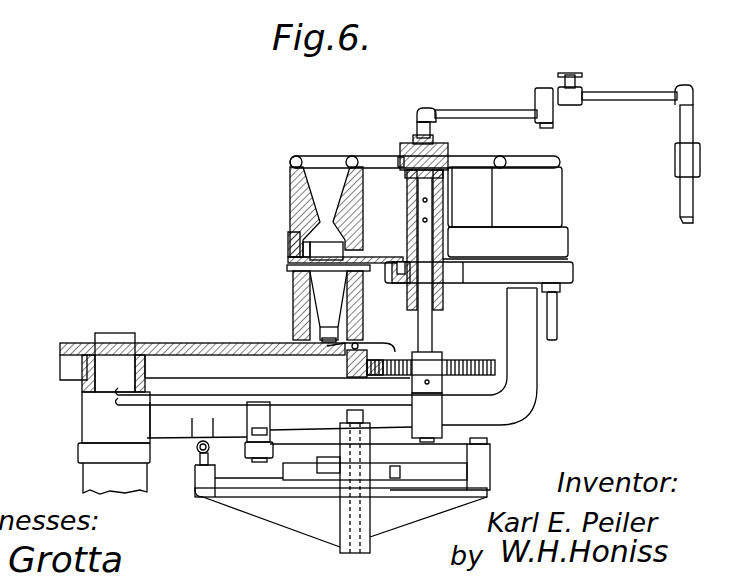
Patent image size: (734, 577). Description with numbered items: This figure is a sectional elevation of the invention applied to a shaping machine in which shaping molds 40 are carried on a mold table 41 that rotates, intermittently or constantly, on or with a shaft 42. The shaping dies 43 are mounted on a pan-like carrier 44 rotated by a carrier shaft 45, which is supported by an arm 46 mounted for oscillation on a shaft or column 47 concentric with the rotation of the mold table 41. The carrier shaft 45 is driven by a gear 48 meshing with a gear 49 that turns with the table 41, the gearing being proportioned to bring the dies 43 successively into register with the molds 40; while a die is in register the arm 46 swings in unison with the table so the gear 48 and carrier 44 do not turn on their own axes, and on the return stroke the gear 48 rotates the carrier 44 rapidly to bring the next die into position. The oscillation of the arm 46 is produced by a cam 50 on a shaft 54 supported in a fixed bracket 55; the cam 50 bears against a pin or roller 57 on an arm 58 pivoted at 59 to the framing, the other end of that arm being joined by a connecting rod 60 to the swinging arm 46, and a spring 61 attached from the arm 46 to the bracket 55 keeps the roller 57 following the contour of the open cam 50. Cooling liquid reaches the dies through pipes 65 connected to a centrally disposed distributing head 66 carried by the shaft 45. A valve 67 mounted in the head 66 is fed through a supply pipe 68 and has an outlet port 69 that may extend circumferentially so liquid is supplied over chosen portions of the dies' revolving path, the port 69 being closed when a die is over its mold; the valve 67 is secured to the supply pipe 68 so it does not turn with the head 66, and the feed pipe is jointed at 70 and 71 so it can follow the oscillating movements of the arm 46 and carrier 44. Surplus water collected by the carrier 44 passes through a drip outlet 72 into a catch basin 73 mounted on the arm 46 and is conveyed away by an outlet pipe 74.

The shaping molds 40 is at (292, 300).
The mold table 41 is at (185, 343).
The shaft 42 is at (115, 333).
The shaping dies 43 is at (292, 205).
The carrier 44 is at (290, 243).
The carrier shaft 45 is at (428, 325).
The arm 46 is at (522, 403).
The shaft or column 47 is at (85, 480).
The gear 48 is at (495, 368).
The gear 49 is at (394, 352).
The cam 50 is at (400, 471).
The shaft 54 is at (348, 415).
The bracket 55 is at (371, 532).
The pin or roller 57 is at (317, 460).
The arm 58 is at (490, 447).
The pivot 59 is at (488, 441).
The connecting rod 60 is at (250, 440).
The spring 61 is at (197, 445).
The pipes 65 is at (368, 140).
The distributing head 66 is at (408, 178).
The valve 67 is at (411, 146).
The supply pipe 68 is at (490, 112).
The outlet port 69 is at (440, 160).
The joint 70 is at (555, 112).
The joint 71 is at (676, 163).
The drip outlet 72 is at (402, 284).
The catch basin 73 is at (575, 269).
The outlet pipe 74 is at (558, 328).